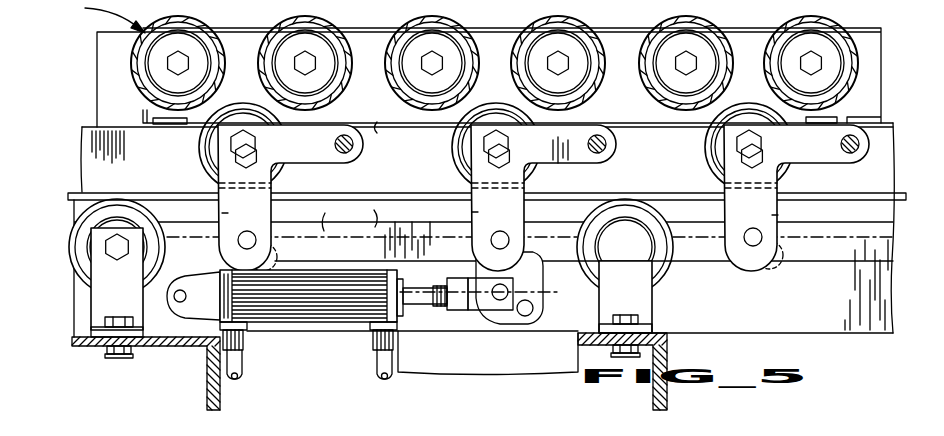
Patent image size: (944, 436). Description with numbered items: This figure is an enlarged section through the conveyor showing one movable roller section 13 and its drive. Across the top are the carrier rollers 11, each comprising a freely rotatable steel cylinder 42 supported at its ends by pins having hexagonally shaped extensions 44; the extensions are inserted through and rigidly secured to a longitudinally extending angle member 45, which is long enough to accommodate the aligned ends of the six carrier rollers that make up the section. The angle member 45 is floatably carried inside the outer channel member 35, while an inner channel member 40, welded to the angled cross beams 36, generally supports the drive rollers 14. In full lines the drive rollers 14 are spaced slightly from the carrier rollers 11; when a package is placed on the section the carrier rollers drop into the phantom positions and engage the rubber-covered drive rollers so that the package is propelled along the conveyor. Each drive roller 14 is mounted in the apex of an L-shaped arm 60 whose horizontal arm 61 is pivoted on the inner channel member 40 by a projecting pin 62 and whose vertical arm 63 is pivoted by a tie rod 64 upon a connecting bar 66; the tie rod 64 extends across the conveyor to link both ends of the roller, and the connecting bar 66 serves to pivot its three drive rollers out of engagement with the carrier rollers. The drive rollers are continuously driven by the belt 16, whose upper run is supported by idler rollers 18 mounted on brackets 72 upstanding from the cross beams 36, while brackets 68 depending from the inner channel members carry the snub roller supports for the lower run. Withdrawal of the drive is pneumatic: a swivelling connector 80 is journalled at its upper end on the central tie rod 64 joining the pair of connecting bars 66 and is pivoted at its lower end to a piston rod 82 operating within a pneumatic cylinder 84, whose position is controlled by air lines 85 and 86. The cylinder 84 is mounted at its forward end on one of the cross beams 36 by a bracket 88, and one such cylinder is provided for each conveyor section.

The carrier roller 11 is at (287, 4).
The movable roller section 13 is at (95, 16).
The drive roller 14 is at (200, 171).
The belt 16 is at (70, 196).
The idler roller 18 is at (80, 214).
The outer channel member 35 is at (103, 55).
The angled cross beam 36 is at (100, 342).
The inner channel member 40 is at (90, 169).
The steel cylinder 42 is at (181, 24).
The hexagonally shaped extension 44 is at (298, 62).
The angle member 45 is at (390, 137).
The L-shaped arm 60 is at (295, 170).
The horizontal arm 61 is at (318, 158).
The projecting pin 62 is at (355, 155).
The vertical arm 63 is at (233, 233).
The tie rod 64 is at (236, 257).
The connecting bar 66 is at (349, 215).
The bracket 68 is at (565, 362).
The bracket 72 is at (103, 299).
The swivelling connector 80 is at (540, 308).
The piston rod 82 is at (414, 300).
The pneumatic cylinder 84 is at (306, 316).
The air line 85 is at (246, 366).
The air line 86 is at (378, 372).
The bracket 88 is at (192, 335).